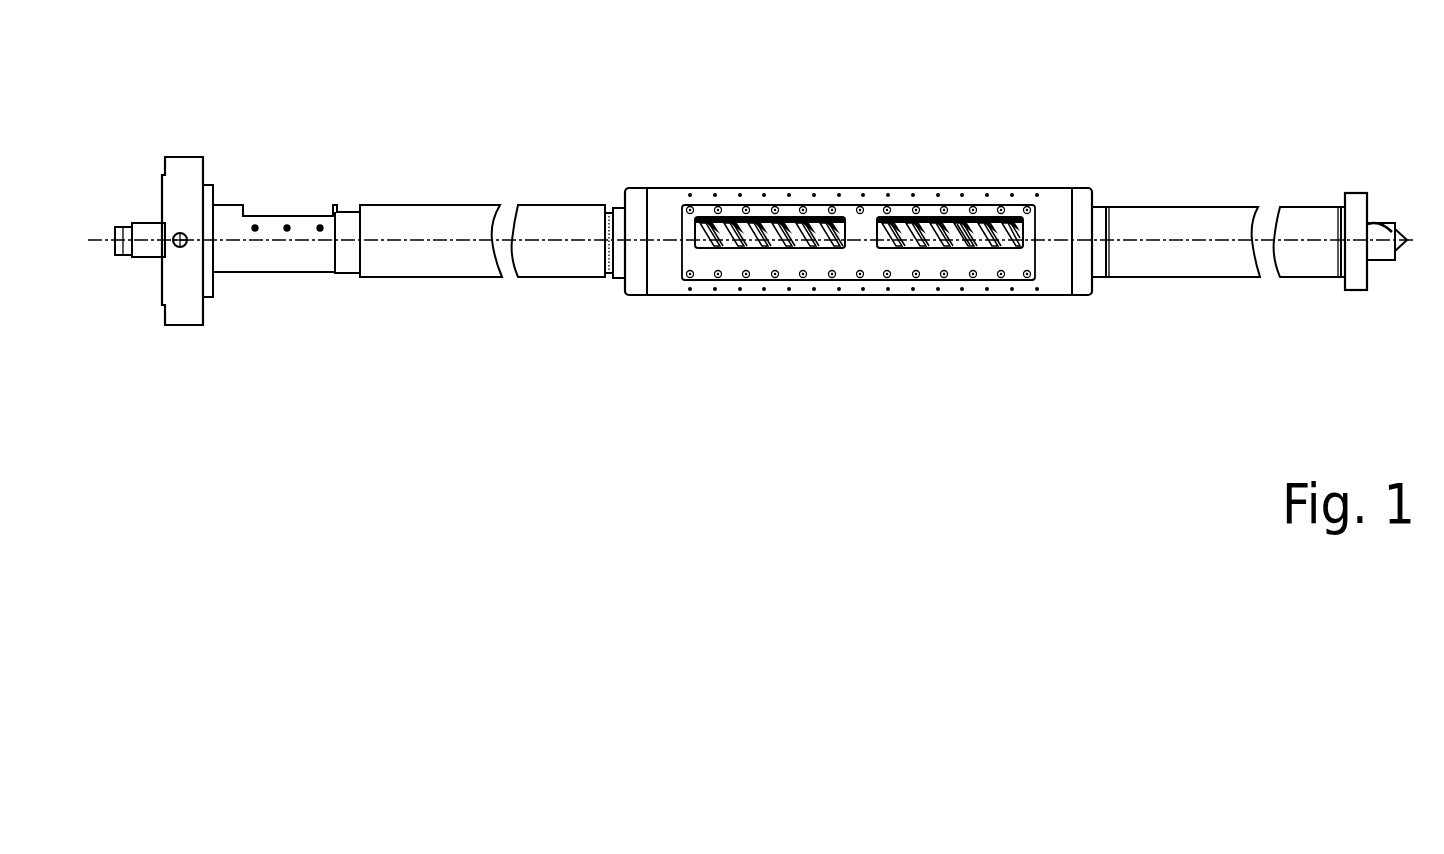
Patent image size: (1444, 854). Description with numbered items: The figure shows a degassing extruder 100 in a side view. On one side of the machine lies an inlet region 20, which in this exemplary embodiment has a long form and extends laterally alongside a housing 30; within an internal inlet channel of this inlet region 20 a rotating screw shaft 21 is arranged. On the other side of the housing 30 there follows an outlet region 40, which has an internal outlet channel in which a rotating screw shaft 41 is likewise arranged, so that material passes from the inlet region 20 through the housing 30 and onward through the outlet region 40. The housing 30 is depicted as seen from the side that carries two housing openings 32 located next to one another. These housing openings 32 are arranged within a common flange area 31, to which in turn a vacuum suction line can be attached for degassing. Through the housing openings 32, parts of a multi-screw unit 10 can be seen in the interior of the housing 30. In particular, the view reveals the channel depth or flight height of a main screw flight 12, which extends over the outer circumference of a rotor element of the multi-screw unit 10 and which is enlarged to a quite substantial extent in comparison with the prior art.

The degassing extruder 100 is at (150, 99).
The multi-screw unit 10 is at (918, 214).
The main screw flight 12 is at (973, 214).
The inlet region 20 is at (422, 263).
The rotating screw shaft 21 is at (145, 252).
The housing 30 is at (880, 297).
The common flange area 31 is at (856, 208).
The housing openings 32 is at (735, 215).
The outlet region 40 is at (1155, 260).
The rotating screw shaft 41 is at (1375, 237).